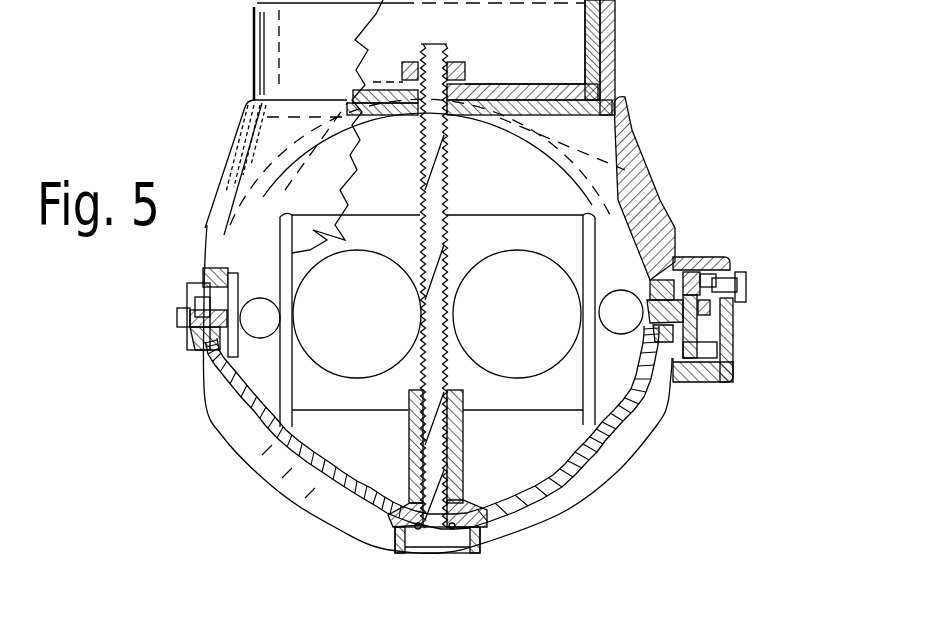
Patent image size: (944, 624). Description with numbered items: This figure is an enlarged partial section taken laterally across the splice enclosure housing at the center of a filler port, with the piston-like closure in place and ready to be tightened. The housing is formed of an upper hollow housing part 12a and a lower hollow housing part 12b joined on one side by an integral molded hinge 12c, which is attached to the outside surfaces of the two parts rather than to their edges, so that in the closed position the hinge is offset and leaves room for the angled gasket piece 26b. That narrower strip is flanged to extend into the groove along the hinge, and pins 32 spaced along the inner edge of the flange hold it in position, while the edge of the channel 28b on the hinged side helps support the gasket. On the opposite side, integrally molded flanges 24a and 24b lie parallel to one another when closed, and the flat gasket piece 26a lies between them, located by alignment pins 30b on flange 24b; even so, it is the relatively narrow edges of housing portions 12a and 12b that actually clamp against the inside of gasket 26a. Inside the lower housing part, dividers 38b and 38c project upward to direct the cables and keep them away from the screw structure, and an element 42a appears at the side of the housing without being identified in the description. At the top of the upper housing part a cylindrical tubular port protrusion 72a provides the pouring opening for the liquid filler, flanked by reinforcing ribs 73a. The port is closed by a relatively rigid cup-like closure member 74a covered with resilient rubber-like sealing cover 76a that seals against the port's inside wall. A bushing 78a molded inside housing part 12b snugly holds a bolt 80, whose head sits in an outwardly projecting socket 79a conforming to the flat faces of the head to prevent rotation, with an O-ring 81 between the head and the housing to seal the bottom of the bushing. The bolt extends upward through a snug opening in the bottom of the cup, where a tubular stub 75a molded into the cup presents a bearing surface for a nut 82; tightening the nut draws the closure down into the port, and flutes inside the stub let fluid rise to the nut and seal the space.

The upper hollow housing part 12a is at (651, 138).
The lower hollow housing part 12b is at (578, 466).
The integral molded hinge 12c is at (190, 347).
The flange 24a is at (700, 282).
The flange 24b is at (707, 338).
The flat gasket piece 26a is at (703, 315).
The angled gasket piece 26b is at (186, 320).
The channel 28b is at (180, 370).
The alignment pin 30b is at (702, 280).
The pin 32 is at (237, 308).
The divider 38b is at (580, 428).
The divider 38c is at (290, 420).
The mounting bracket 42a is at (733, 372).
The tubular port protrusion 72a is at (252, 148).
The reinforcing rib 73a is at (228, 166).
The cup-like closure member 74a is at (273, 47).
The tubular stub 75a is at (462, 92).
The rubber-like sealing cover 76a is at (256, 72).
The bushing 78a is at (456, 472).
The socket 79a is at (488, 538).
The bolt 80 is at (455, 535).
The O-ring 81 is at (403, 530).
The nut 82 is at (448, 78).